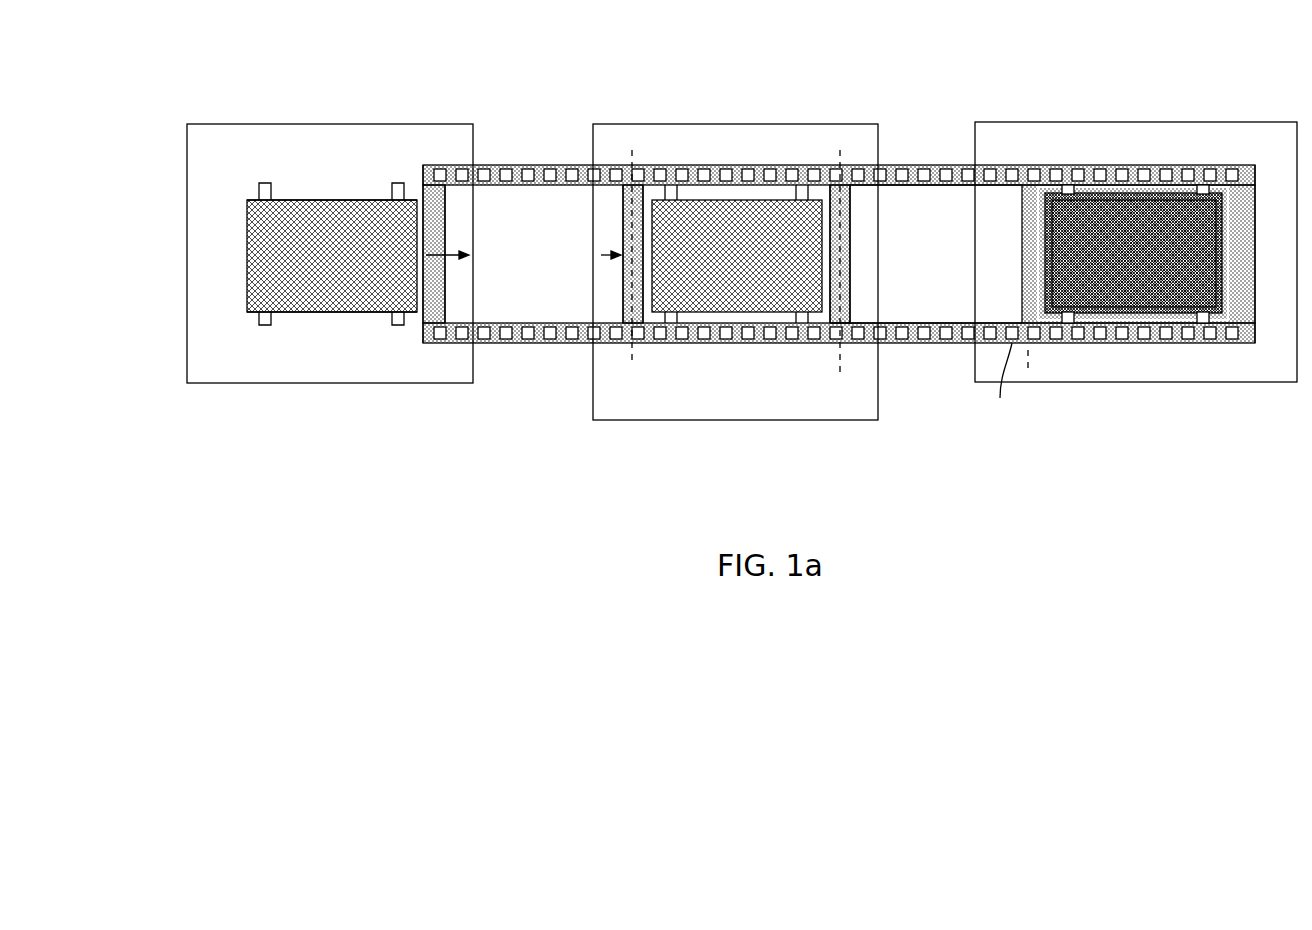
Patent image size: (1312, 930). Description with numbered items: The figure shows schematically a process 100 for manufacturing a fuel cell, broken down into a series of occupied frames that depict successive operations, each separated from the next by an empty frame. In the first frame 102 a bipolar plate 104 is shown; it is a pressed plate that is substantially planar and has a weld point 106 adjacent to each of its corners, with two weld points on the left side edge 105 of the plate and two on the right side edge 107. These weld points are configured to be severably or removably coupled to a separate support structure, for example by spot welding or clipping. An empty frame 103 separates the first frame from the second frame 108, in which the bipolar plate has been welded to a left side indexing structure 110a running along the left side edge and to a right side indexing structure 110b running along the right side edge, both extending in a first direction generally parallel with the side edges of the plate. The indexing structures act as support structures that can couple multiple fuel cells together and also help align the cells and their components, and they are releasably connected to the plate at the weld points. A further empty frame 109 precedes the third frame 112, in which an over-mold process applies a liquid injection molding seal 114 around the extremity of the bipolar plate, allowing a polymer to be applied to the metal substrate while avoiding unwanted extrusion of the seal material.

The process 100 is at (209, 530).
The first frame 102 is at (447, 383).
The empty frame 103 is at (546, 363).
The bipolar plate 104 is at (367, 198).
The left side edge 105 is at (321, 194).
The weld point 106 is at (266, 182).
The right side edge 107 is at (328, 320).
The second frame 108 is at (748, 421).
The empty frame 109 is at (920, 377).
The left side indexing structure 110a is at (858, 164).
The right side indexing structure 110b is at (860, 344).
The third frame 112 is at (1172, 383).
The LIM seal 114 is at (1213, 344).